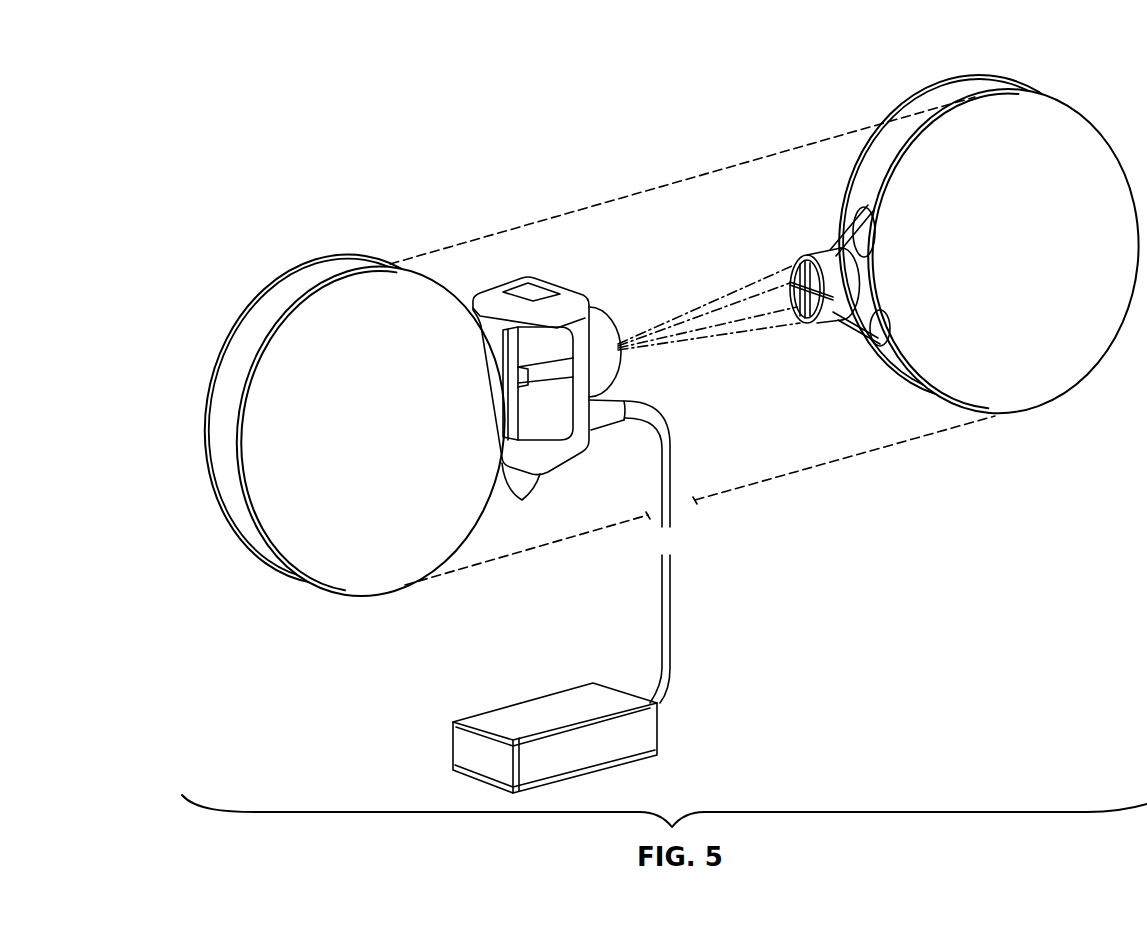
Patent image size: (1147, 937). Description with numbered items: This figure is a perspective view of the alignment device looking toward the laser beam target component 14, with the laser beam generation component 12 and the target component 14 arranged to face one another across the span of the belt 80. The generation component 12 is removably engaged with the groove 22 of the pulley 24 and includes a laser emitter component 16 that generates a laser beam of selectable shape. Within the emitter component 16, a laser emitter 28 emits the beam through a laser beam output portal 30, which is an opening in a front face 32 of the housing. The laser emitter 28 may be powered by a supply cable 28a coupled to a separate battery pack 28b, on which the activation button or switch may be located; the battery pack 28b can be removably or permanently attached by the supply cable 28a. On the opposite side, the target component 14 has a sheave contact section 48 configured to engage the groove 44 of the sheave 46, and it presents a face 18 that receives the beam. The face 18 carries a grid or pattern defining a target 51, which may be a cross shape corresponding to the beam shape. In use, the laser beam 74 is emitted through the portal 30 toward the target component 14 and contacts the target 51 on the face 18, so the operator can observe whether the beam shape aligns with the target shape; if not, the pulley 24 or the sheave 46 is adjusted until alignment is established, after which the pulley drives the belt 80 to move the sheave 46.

The laser beam generation component 12 is at (509, 270).
The laser beam target component 14 is at (776, 220).
The laser emitter component 16 is at (537, 472).
The face 18 is at (793, 267).
The groove 22 is at (335, 277).
The pulley 24 is at (395, 277).
The laser emitter 28 is at (558, 332).
The supply cable 28a is at (667, 623).
The battery pack 28b is at (652, 735).
The laser beam output portal 30 is at (622, 340).
The front face 32 is at (613, 378).
The groove 44 is at (975, 86).
The sheave 46 is at (1032, 405).
The sheave contact section 48 is at (838, 232).
The target 51 is at (813, 325).
The laser beam 74 is at (735, 300).
The belt 80 is at (589, 204).